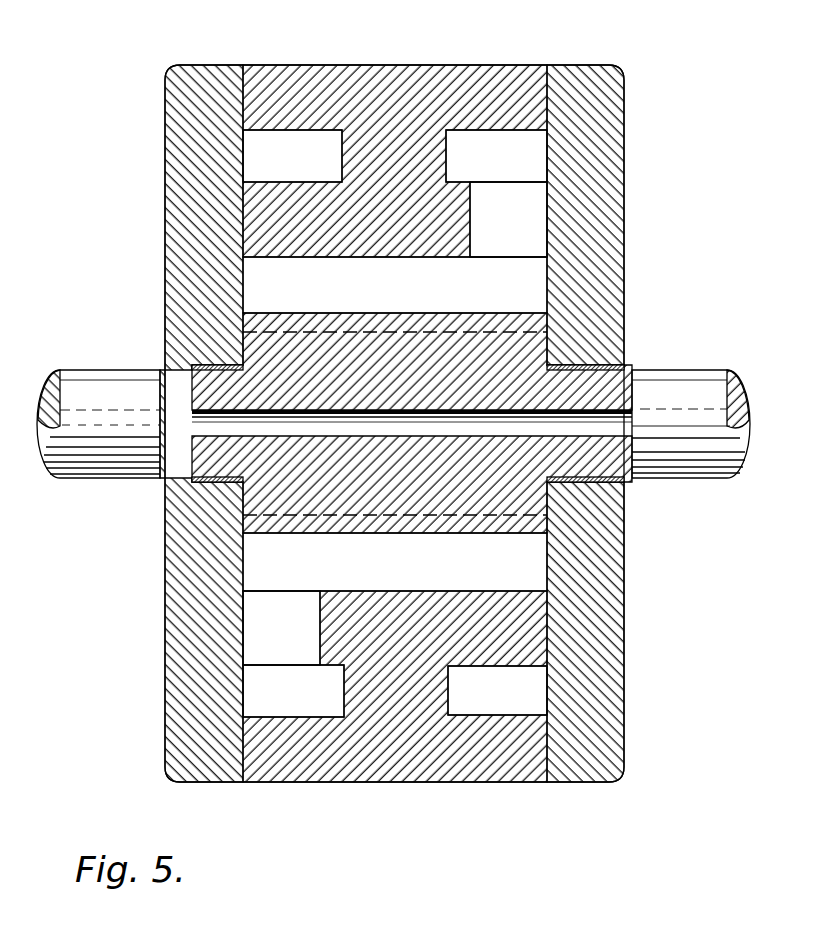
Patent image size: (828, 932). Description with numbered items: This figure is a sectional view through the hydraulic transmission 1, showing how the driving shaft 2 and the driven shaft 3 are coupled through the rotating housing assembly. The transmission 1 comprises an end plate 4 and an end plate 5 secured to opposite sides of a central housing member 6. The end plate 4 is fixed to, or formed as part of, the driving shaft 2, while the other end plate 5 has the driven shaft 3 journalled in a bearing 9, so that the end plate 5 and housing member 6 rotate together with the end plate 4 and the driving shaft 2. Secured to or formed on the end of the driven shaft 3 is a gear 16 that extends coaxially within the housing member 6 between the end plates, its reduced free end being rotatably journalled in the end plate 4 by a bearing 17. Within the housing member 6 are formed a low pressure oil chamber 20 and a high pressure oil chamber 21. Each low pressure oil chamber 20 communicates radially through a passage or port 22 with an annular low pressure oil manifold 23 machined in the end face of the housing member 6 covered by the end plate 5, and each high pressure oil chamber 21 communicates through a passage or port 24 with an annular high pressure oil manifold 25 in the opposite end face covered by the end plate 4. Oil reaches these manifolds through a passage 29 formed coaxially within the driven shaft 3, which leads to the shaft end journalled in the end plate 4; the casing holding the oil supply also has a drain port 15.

The transmission 1 is at (524, 63).
The driving shaft 2 is at (75, 368).
The driven shaft 3 is at (706, 359).
The end plate 4 is at (165, 245).
The end plate 5 is at (624, 223).
The central housing member 6 is at (398, 65).
The bearing 9 is at (607, 487).
The drain port 15 is at (308, 312).
The gear 16 is at (485, 533).
The bearing 17 is at (203, 485).
The low pressure oil chamber 20 is at (400, 291).
The high pressure oil chamber 21 is at (367, 573).
The passage or port 22 is at (492, 226).
The low pressure oil manifold 23 is at (482, 168).
The passage or port 24 is at (272, 638).
The high pressure oil manifold 25 is at (279, 165).
The passage 29 is at (385, 433).